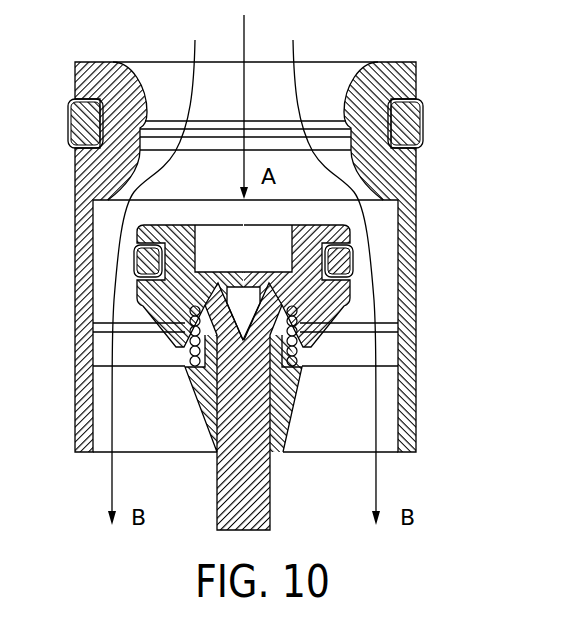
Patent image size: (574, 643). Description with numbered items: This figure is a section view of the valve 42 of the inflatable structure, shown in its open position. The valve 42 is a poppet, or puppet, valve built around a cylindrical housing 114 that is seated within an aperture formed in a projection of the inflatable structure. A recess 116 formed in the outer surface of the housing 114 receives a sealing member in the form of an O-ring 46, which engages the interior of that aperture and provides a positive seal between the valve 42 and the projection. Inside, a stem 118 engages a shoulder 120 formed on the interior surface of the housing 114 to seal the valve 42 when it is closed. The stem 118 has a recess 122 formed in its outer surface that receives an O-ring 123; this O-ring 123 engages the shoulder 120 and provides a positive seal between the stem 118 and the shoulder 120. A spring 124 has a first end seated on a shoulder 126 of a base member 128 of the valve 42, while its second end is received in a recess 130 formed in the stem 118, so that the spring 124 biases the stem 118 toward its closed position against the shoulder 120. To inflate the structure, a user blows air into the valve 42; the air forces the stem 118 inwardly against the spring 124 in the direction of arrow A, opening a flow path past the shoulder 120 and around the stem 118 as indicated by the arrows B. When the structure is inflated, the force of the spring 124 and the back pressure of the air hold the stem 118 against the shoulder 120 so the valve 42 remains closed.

The valve 42 is at (464, 437).
The O-ring 46 is at (412, 130).
The cylindrical housing 114 is at (405, 230).
The recess 116 is at (423, 107).
The stem 118 is at (177, 334).
The shoulder 120 is at (132, 174).
The recess 122 is at (165, 257).
The O-ring 123 is at (134, 262).
The spring 124 is at (300, 352).
The shoulder 126 is at (303, 368).
The base member 128 is at (292, 426).
The recess 130 is at (300, 319).